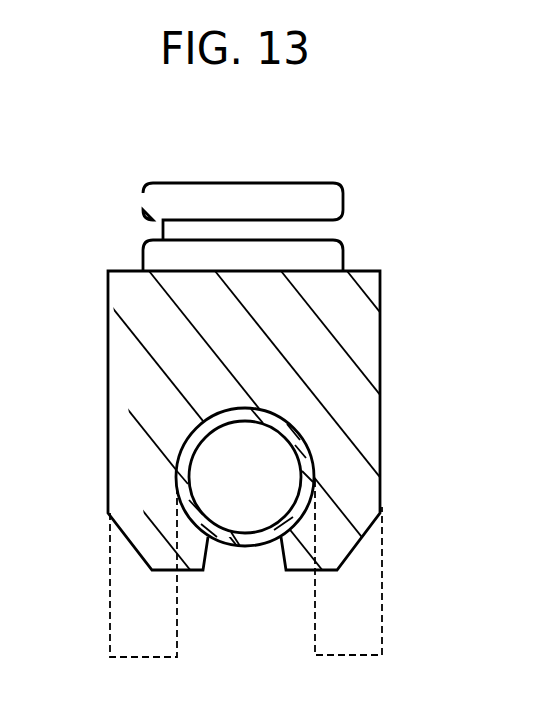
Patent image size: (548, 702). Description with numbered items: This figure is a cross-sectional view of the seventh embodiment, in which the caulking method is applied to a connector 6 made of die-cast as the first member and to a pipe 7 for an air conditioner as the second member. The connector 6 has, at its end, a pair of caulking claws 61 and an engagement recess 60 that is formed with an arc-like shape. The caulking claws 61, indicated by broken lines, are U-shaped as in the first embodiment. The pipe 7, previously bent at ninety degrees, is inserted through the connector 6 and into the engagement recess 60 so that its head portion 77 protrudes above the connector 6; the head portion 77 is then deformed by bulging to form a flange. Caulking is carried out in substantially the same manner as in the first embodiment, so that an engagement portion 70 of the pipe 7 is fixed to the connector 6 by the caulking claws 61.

The connector 6 is at (313, 348).
The pipe 7 is at (296, 442).
The engagement recess 60 is at (197, 432).
The caulking claws 61 is at (148, 465).
The engagement portion 70 is at (218, 460).
The head portion 77 is at (298, 197).